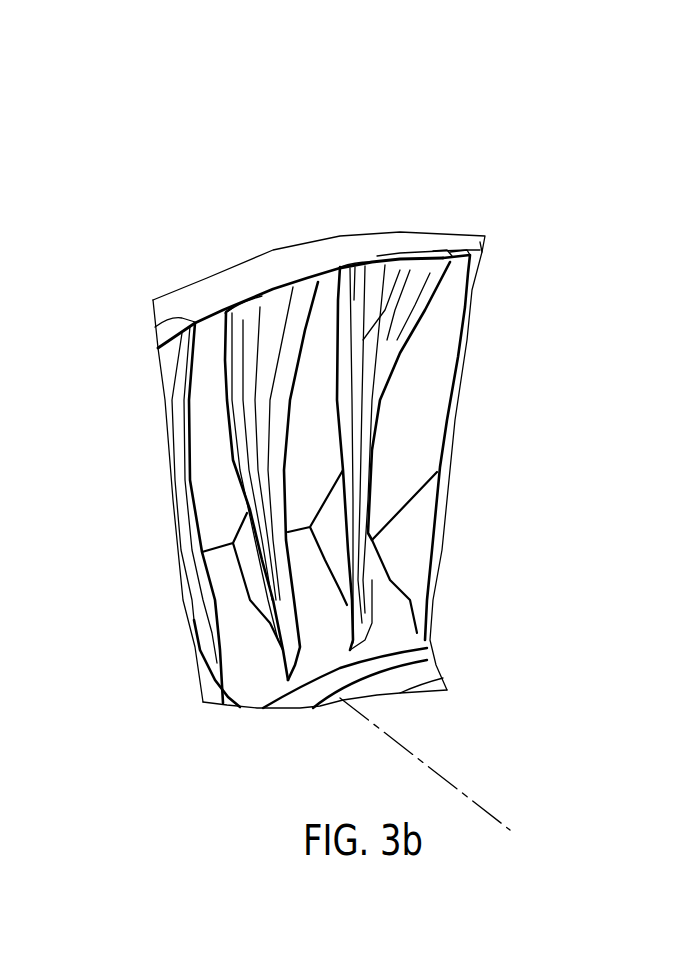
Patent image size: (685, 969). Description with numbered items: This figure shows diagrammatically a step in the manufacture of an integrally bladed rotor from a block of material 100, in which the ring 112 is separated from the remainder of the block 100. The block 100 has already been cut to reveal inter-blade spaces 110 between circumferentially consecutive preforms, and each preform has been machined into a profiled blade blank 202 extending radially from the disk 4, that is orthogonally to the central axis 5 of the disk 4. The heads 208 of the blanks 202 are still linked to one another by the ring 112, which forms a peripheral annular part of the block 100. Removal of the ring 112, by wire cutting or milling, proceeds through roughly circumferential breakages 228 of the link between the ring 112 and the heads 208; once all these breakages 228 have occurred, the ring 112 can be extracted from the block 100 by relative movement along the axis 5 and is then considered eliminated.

The block of material 100 is at (203, 196).
The ring 112 is at (457, 244).
The heads of the blanks 208 is at (250, 310).
The breakages 228 is at (280, 302).
The profiled blade blank 202 is at (397, 308).
The inter-blade spaces 110 is at (308, 450).
The disk 4 is at (430, 672).
The central axis 5 is at (483, 807).